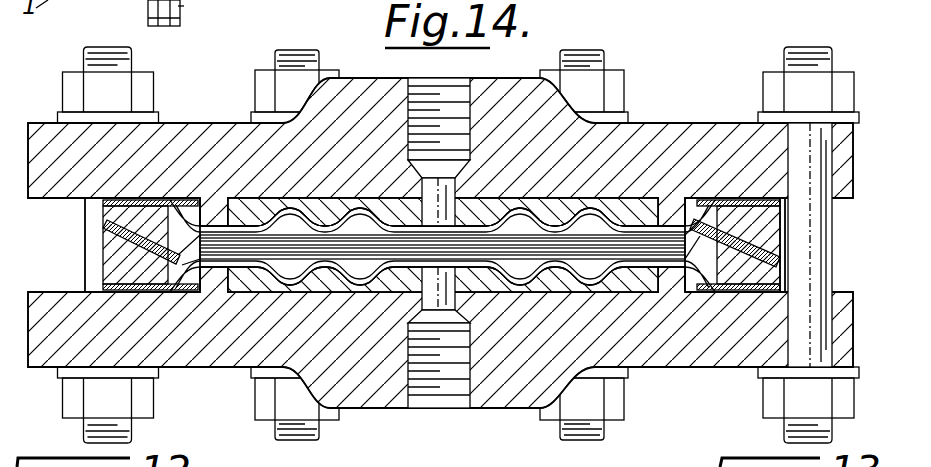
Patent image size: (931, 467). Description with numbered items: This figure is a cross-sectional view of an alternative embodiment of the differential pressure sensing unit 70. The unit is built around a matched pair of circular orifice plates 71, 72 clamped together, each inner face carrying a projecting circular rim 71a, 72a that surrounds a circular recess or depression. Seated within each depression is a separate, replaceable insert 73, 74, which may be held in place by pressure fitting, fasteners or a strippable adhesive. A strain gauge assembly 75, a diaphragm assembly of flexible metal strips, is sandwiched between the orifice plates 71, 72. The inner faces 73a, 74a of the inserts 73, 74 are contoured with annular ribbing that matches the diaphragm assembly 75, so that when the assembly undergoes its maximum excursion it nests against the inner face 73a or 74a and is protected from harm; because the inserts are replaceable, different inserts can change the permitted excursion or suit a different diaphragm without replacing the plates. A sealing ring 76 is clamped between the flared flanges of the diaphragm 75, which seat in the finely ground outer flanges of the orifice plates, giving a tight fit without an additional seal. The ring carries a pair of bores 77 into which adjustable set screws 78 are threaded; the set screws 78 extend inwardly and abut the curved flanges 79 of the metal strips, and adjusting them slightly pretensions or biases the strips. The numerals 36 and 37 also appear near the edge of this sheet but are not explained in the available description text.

The differential pressure sensing unit 70 is at (461, 252).
The orifice plate 71 is at (388, 400).
The projecting circular rim 71a is at (212, 273).
The orifice plate 72 is at (658, 123).
The projecting circular rim 72a is at (672, 200).
The replaceable insert 73 is at (637, 292).
The inner face of insert 73a is at (485, 263).
The replaceable insert 74 is at (240, 203).
The inner face of insert 74a is at (478, 228).
The strain gauge assembly 75 is at (400, 222).
The sealing ring 76 is at (777, 210).
The bore 77 is at (107, 228).
The adjustable set screw 78 is at (167, 257).
The curved flange 79 is at (103, 215).
The clevis 36 is at (196, 0).
The pin 37 is at (146, 3).